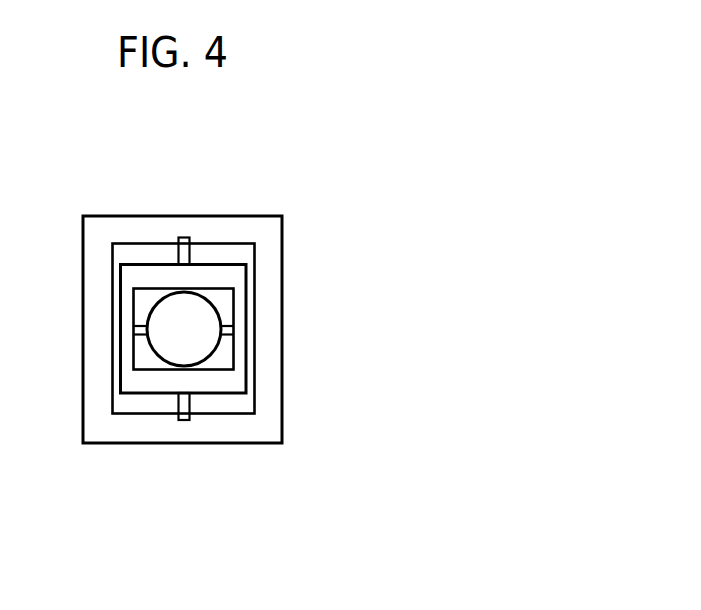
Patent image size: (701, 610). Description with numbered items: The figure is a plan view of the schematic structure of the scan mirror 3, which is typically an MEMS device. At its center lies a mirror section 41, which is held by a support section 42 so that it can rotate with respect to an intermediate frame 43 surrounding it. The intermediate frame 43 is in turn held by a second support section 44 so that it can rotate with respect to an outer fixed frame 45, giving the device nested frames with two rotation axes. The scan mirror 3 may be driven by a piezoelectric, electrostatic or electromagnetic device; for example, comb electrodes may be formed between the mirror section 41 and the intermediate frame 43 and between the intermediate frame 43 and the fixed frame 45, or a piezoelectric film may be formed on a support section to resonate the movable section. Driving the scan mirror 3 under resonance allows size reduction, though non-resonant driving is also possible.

The scan mirror 3 is at (410, 243).
The mirror section 41 is at (200, 317).
The support section 42 is at (223, 338).
The intermediate frame 43 is at (230, 383).
The support section 44 is at (190, 405).
The fixed frame 45 is at (263, 223).